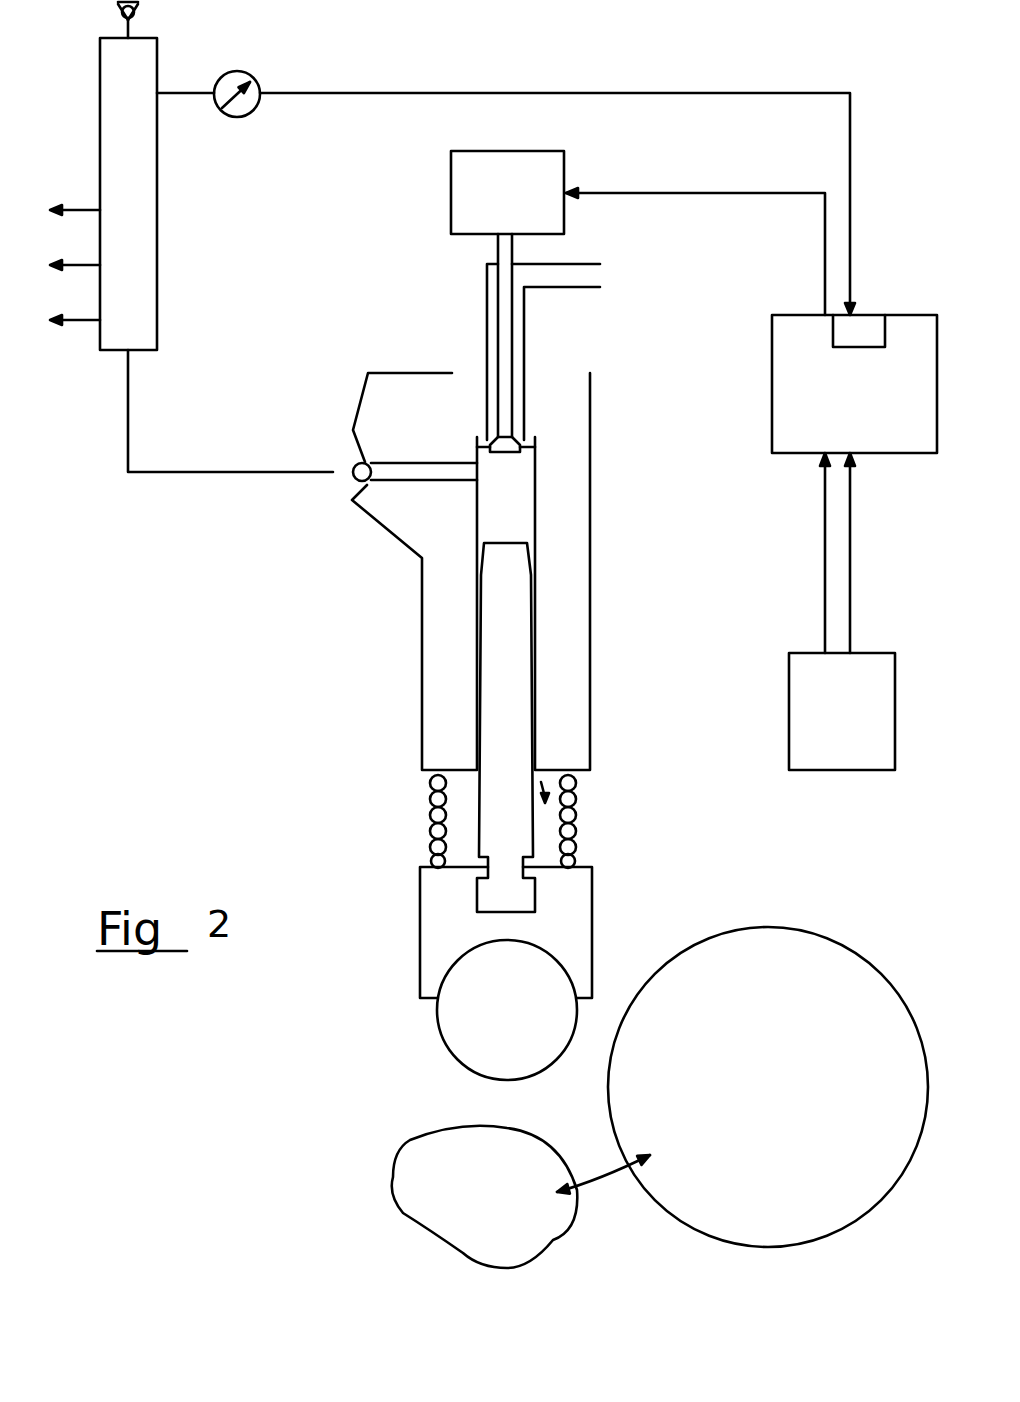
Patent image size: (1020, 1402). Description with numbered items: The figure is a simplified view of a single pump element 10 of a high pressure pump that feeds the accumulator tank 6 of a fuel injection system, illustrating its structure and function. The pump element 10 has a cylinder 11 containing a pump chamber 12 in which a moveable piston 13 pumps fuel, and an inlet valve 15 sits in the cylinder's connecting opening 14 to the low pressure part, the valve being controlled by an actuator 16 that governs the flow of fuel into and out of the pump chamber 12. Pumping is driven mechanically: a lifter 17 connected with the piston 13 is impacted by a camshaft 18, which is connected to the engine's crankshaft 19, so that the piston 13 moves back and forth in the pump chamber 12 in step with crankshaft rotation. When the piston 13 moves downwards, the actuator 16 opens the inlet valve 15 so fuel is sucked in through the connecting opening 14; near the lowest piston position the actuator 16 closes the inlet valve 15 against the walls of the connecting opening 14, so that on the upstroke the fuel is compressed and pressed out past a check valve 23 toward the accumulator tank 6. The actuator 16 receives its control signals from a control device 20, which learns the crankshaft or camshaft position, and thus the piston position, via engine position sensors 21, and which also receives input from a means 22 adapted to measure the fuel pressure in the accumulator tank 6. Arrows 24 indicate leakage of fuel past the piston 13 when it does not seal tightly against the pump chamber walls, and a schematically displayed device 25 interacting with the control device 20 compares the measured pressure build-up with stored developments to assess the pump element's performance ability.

The accumulator tank 6 is at (153, 253).
The pump element 10 is at (516, 571).
The cylinder 11 is at (572, 682).
The pump chamber 12 is at (493, 525).
The piston 13 is at (500, 663).
The connecting opening 14 is at (490, 437).
The inlet valve 15 is at (525, 425).
The actuator 16 is at (457, 203).
The lifter 17 is at (455, 1017).
The camshaft 18 is at (453, 1160).
The crankshaft 19 is at (743, 1080).
The control device 20 is at (885, 457).
The engine position sensors 21 is at (798, 722).
The means adapted to measure the fuel pressure 22 is at (262, 90).
The check valve 23 is at (353, 487).
The arrows 24 is at (468, 790).
The device 25 is at (872, 323).